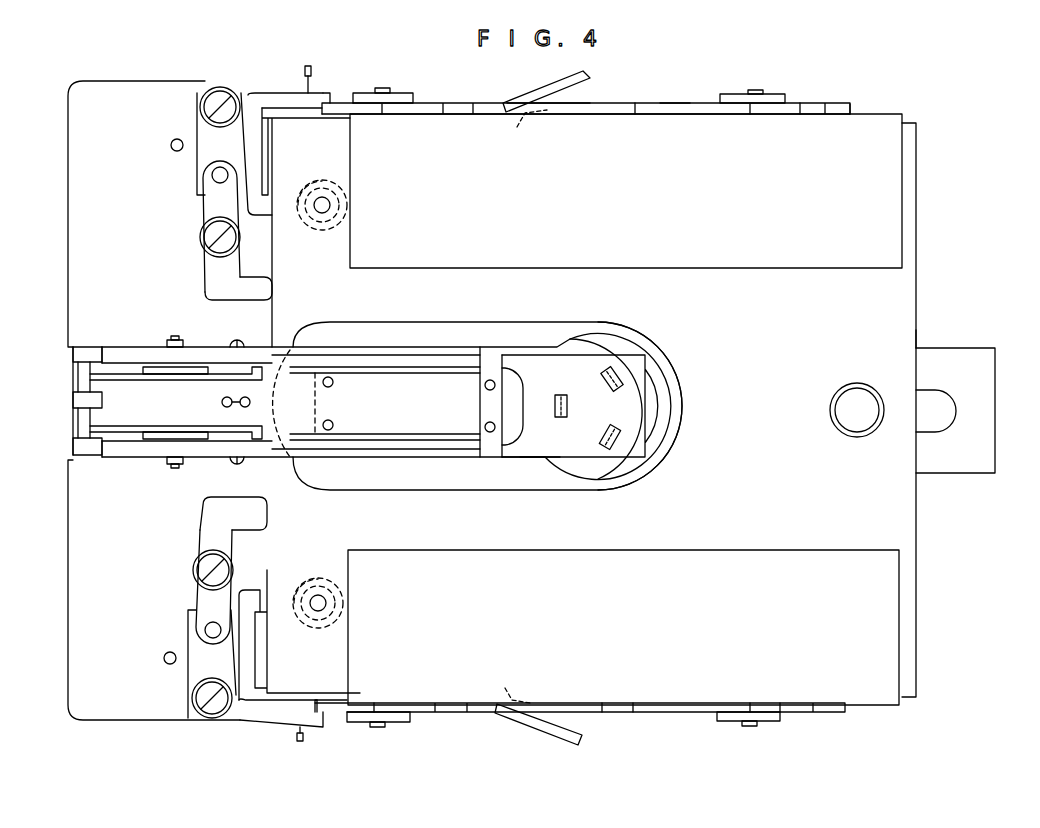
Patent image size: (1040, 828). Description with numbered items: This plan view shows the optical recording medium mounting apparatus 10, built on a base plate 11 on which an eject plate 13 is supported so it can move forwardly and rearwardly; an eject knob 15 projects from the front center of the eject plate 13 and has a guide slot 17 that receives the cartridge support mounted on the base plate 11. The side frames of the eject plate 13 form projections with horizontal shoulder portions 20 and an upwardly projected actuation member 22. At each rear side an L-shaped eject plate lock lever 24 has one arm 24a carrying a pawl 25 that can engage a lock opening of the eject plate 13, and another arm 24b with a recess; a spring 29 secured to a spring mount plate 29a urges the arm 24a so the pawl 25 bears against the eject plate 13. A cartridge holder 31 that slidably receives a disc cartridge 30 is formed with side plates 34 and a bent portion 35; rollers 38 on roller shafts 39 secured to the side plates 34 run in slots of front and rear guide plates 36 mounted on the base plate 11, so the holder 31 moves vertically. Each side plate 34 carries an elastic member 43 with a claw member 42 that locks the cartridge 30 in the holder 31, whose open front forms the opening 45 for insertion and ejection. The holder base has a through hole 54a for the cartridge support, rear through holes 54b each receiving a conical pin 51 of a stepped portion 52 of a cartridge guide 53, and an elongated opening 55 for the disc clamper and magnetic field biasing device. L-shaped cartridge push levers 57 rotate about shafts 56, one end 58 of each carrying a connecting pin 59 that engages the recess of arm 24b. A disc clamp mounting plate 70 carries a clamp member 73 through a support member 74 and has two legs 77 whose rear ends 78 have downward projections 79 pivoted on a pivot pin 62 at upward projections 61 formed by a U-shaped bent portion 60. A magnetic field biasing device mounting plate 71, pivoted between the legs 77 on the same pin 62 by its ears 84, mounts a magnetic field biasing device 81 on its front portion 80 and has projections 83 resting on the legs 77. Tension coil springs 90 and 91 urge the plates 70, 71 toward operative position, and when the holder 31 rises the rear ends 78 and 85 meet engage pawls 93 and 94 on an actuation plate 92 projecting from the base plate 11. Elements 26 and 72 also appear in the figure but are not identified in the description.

The optical recording medium mounting apparatus 10 is at (876, 61).
The base plate 11 is at (135, 721).
The eject plate 13 is at (677, 97).
The eject knob 15 is at (996, 408).
The guide slot 17 is at (936, 389).
The horizontal shoulder portion 20 is at (459, 102).
The actuation member 22 is at (618, 115).
The eject plate lock lever 24 is at (238, 88).
The arm of eject plate lock lever 24a is at (268, 92).
The arm of eject plate lock lever 24b is at (197, 135).
The pawl 25 is at (342, 102).
The screw 26 is at (205, 92).
The spring 29 is at (304, 752).
The spring mount plate 29a is at (292, 100).
The disc cartridge 30 is at (916, 284).
The cartridge holder 31 is at (888, 108).
The side plates 34 is at (799, 102).
The bent portion 35 is at (791, 269).
The guide plates 36 is at (406, 93).
The roller 38 is at (382, 115).
The roller shaft 39 is at (383, 87).
The claw member 42 is at (560, 96).
The elastic member 43 is at (536, 90).
The opening 45 is at (952, 322).
The conical pin 51 is at (331, 205).
The stepped portion 52 is at (342, 214).
The cartridge guide 53 is at (325, 230).
The through hole 54a is at (860, 437).
The through holes 54b is at (346, 186).
The elongated opening 55 is at (520, 360).
The shafts 56 is at (199, 235).
The cartridge push lever 57 is at (215, 270).
The end of cartridge push lever 58 is at (212, 175).
The connecting pin 59 is at (212, 182).
The U-shaped bent portion 60 is at (150, 440).
The upward projection 61 is at (150, 366).
The pivot pin 62 is at (176, 339).
The disc clamp mounting plate 70 is at (541, 472).
The magnetic field biasing device mounting plate 71 is at (399, 372).
The drum 72 is at (648, 408).
The clamp member 73 is at (604, 331).
The support member 74 is at (560, 394).
The legs 77 is at (321, 340).
The rear end 78 is at (112, 346).
The downward projection 79 is at (140, 346).
The front portion 80 is at (485, 432).
The magnetic field biasing device 81 is at (355, 352).
The projections 83 is at (490, 354).
The ears 84 is at (212, 374).
The rear end 85 is at (100, 440).
The tension coil spring 90 is at (244, 343).
The tension coil spring 91 is at (221, 402).
The actuation plate 92 is at (72, 380).
The engage pawl 93 is at (88, 346).
The engage pawl 94 is at (102, 400).